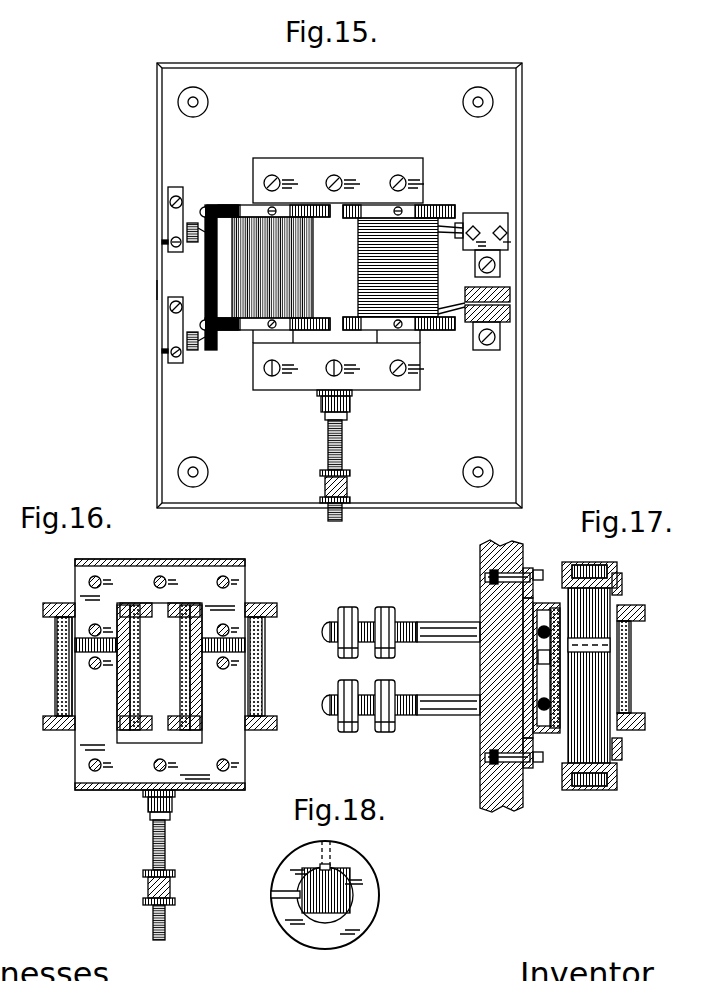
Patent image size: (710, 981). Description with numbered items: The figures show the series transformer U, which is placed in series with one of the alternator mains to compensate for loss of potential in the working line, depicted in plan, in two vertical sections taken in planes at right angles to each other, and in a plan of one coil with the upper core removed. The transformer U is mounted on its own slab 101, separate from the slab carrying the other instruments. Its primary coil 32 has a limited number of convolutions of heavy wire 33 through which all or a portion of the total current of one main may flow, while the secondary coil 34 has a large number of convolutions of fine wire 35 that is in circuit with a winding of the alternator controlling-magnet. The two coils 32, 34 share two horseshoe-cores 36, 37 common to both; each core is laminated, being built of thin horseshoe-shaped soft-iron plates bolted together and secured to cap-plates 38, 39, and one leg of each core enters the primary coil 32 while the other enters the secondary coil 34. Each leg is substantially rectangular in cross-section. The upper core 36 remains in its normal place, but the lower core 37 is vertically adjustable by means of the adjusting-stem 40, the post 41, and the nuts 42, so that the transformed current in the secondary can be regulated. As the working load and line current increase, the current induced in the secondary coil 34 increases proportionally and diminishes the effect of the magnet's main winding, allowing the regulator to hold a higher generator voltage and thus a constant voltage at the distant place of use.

In FIG. 15, the slab 101 is at (339, 285).
In FIG. 17, the slab 101 is at (480, 741).
In FIG. 15, the primary coil 32 is at (440, 207).
In FIG. 16, the primary coil 32 is at (49, 666).
In FIG. 17, the primary coil 32 is at (678, 623).
In FIG. 18, the primary coil 32 is at (378, 880).
In FIG. 15, the heavy wire 33 is at (450, 236).
In FIG. 16, the heavy wire 33 is at (56, 630).
In FIG. 15, the secondary coil 34 is at (235, 206).
In FIG. 16, the secondary coil 34 is at (269, 666).
In FIG. 15, the fine wire 35 is at (192, 331).
In FIG. 16, the fine wire 35 is at (256, 652).
In FIG. 16, the upper horseshoe-core 36 is at (240, 596).
In FIG. 16, the lower horseshoe-core 37 is at (245, 765).
In FIG. 17, the cap-plate 38 is at (577, 568).
In FIG. 17, the cap-plate 39 is at (600, 790).
In FIG. 15, the adjusting-stem 40 is at (343, 455).
In FIG. 16, the adjusting-stem 40 is at (165, 857).
In FIG. 15, the post 41 is at (348, 485).
In FIG. 16, the post 41 is at (170, 889).
In FIG. 15, the nuts 42 is at (320, 474).
In FIG. 16, the nuts 42 is at (143, 876).
In FIG. 15, the series transformer U is at (152, 293).